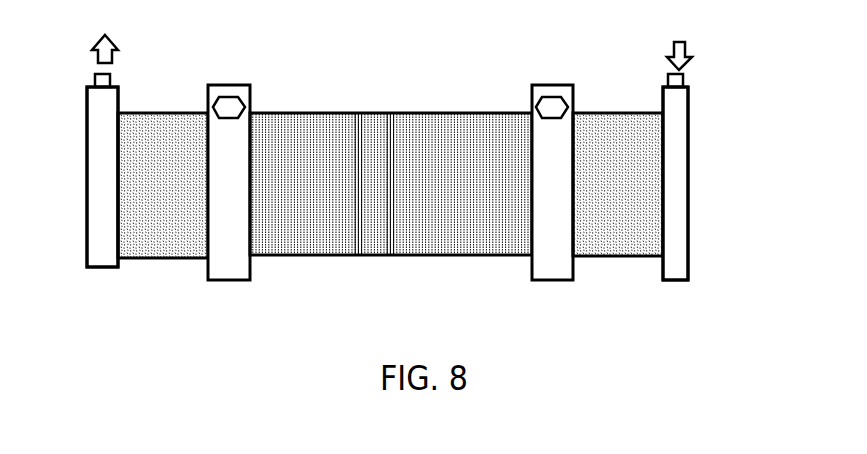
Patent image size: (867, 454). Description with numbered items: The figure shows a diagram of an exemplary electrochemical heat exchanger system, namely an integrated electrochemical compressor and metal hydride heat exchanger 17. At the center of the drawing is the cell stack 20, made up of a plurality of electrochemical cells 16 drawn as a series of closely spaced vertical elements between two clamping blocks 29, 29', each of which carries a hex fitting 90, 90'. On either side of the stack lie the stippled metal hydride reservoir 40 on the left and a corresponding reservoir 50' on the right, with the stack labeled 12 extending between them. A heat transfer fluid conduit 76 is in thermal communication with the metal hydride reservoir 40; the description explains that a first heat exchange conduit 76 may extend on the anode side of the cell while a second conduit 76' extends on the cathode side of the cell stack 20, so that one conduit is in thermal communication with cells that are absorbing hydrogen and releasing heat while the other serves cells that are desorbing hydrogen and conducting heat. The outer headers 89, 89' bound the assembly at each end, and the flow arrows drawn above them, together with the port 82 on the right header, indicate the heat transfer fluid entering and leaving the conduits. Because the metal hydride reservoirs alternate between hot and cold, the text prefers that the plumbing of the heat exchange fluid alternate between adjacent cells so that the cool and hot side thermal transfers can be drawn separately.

The fiber bundle / hollow fiber membrane module 12 is at (497, 123).
The electrochemical cells 16 is at (358, 135).
The integrated electrochemical compressor and metal hydride heat exchanger 17 is at (355, 97).
The cell stack 20 is at (392, 120).
The clamp block (left) 29 is at (222, 146).
The clamp block (right) 29' is at (537, 145).
The metal hydride reservoir 40 is at (177, 133).
The porous material region (right) 50' is at (618, 153).
The heat transfer fluid conduit 76 is at (125, 156).
The end fitting (right) 76' is at (708, 177).
The inlet port 82 is at (683, 72).
The header (left) 89 is at (71, 170).
The header (right) 89' is at (707, 183).
The hex fitting (left) 90 is at (238, 77).
The hex fitting (right) 90' is at (563, 69).